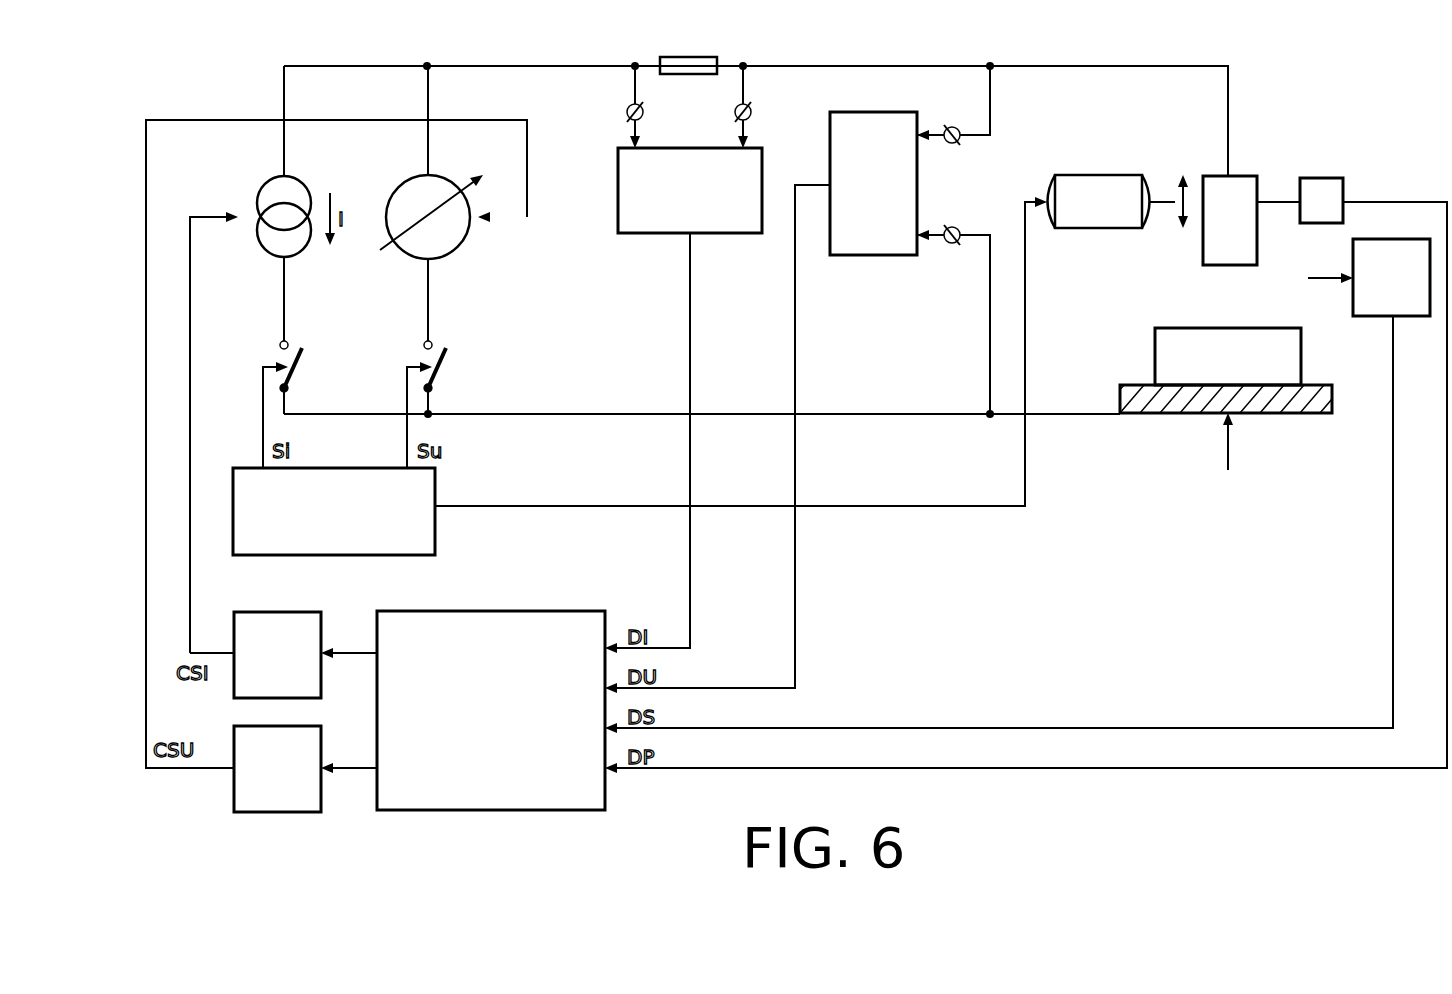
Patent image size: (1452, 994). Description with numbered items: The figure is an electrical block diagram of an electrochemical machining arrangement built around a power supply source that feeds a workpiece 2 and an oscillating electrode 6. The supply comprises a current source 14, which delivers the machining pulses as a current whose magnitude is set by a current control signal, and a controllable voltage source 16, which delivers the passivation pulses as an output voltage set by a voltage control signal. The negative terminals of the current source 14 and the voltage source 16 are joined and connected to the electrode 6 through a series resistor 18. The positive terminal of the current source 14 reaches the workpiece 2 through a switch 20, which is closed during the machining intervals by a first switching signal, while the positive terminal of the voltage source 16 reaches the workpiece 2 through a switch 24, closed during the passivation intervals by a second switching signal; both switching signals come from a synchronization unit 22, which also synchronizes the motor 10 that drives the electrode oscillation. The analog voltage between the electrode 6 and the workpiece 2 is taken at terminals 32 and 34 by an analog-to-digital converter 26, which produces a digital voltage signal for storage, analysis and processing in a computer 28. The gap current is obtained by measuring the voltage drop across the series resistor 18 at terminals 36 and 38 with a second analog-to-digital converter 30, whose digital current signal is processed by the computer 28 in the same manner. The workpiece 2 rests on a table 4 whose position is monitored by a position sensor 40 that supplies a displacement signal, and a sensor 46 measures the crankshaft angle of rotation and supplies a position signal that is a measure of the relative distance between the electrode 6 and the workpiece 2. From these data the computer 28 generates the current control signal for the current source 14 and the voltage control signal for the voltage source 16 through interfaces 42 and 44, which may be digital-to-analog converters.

The workpiece 2 is at (1280, 335).
The table 4 is at (1178, 415).
The electrode 6 is at (1243, 183).
The motor 10 is at (1117, 182).
The current source 14 is at (258, 247).
The controllable voltage source 16 is at (400, 253).
The series resistor 18 is at (686, 75).
The switch 20 is at (303, 364).
The synchronization unit 22 is at (423, 489).
The switch 24 is at (447, 364).
The analog-to-digital converter 26 is at (850, 125).
The computer 28 is at (548, 810).
The second analog-to-digital converter 30 is at (648, 230).
The terminal 32 is at (953, 124).
The terminal 34 is at (953, 224).
The terminal 36 is at (627, 110).
The terminal 38 is at (753, 110).
The position sensor 40 is at (1367, 318).
The interface 42 is at (303, 623).
The interface 44 is at (277, 812).
The sensor 46 is at (1322, 177).